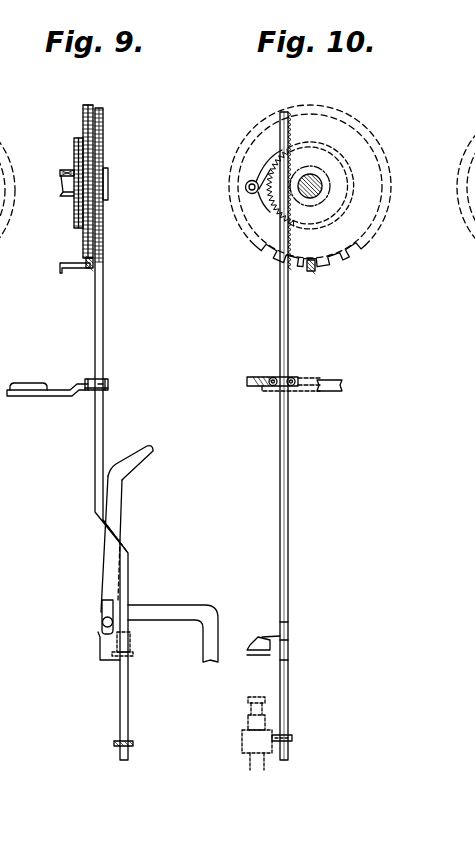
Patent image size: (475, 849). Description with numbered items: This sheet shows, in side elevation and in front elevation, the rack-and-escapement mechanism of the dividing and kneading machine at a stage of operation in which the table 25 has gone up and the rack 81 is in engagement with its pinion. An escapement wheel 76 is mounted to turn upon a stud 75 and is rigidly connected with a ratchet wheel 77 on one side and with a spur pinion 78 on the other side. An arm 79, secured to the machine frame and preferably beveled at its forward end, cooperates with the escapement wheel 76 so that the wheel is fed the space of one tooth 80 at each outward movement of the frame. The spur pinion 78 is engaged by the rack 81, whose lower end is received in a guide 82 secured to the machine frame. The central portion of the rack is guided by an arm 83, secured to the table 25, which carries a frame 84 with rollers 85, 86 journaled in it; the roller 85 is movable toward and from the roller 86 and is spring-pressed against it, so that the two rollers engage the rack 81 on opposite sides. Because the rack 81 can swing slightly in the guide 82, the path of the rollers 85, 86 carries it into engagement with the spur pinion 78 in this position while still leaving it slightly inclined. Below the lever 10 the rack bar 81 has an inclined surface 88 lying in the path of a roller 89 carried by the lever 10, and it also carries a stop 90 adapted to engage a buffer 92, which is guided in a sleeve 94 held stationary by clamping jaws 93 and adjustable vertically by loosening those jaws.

In FIG. 9, the lever 10 is at (118, 499).
In FIG. 9, the table 25 is at (40, 382).
In FIG. 10, the table 25 is at (330, 391).
In FIG. 9, the stud 75 is at (63, 196).
In FIG. 10, the stud 75 is at (307, 178).
In FIG. 9, the escapement wheel 76 is at (83, 120).
In FIG. 10, the escapement wheel 76 is at (365, 130).
In FIG. 9, the ratchet wheel 77 is at (74, 152).
In FIG. 10, the ratchet wheel 77 is at (328, 228).
In FIG. 9, the spur pinion 78 is at (108, 170).
In FIG. 10, the spur pinion 78 is at (296, 208).
In FIG. 9, the arm 79 is at (61, 272).
In FIG. 10, the arm 79 is at (309, 273).
In FIG. 9, the tooth 80 is at (89, 269).
In FIG. 10, the tooth 80 is at (326, 262).
In FIG. 9, the rack 81 is at (103, 127).
In FIG. 10, the rack 81 is at (280, 311).
In FIG. 9, the guide 82 is at (133, 744).
In FIG. 10, the guide 82 is at (290, 736).
In FIG. 9, the arm 83 is at (50, 397).
In FIG. 9, the frame 84 is at (105, 391).
In FIG. 10, the frame 84 is at (255, 387).
In FIG. 10, the roller 85 is at (272, 377).
In FIG. 9, the roller 86 is at (104, 379).
In FIG. 10, the roller 86 is at (292, 377).
In FIG. 9, the inclined surface 88 is at (98, 652).
In FIG. 10, the inclined surface 88 is at (288, 638).
In FIG. 9, the roller 89 is at (102, 626).
In FIG. 9, the stop 90 is at (130, 641).
In FIG. 10, the stop 90 is at (277, 634).
In FIG. 10, the buffer 92 is at (248, 705).
In FIG. 10, the clamping jaws 93 is at (242, 744).
In FIG. 10, the sleeve 94 is at (252, 772).